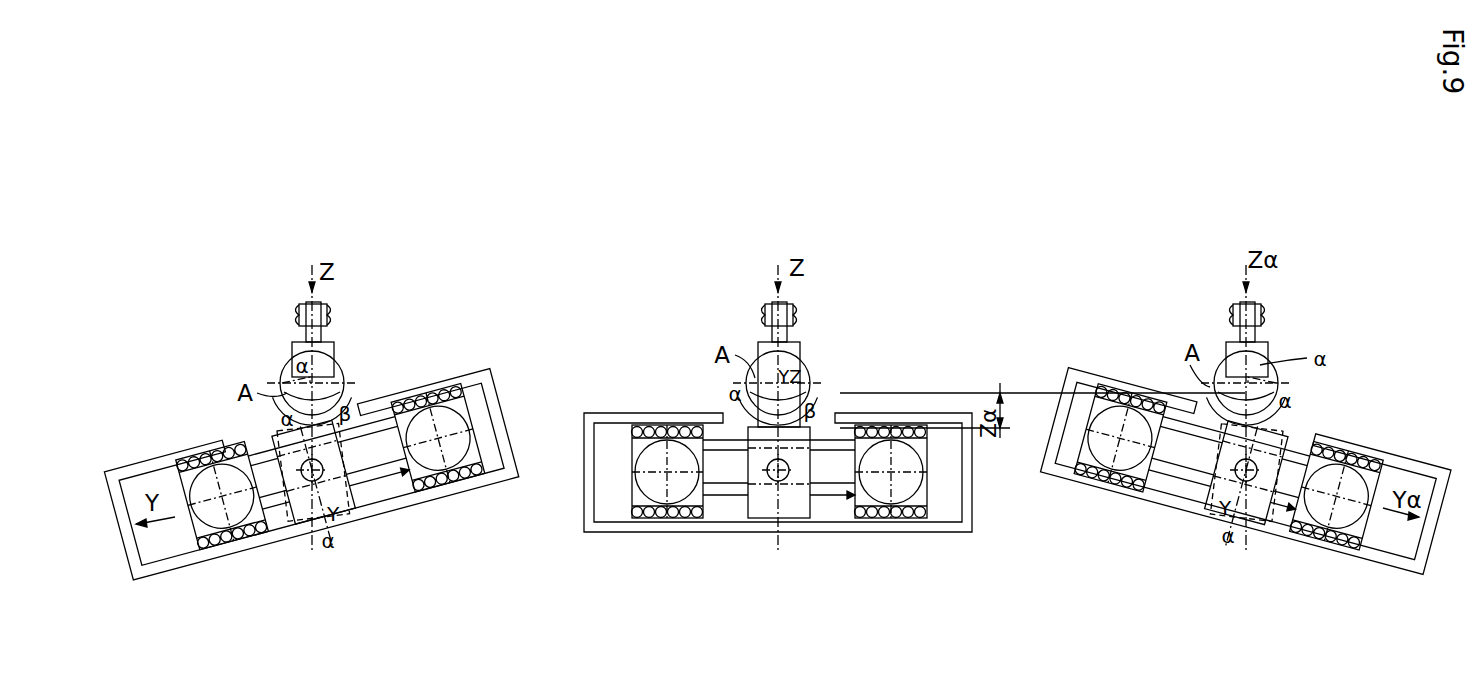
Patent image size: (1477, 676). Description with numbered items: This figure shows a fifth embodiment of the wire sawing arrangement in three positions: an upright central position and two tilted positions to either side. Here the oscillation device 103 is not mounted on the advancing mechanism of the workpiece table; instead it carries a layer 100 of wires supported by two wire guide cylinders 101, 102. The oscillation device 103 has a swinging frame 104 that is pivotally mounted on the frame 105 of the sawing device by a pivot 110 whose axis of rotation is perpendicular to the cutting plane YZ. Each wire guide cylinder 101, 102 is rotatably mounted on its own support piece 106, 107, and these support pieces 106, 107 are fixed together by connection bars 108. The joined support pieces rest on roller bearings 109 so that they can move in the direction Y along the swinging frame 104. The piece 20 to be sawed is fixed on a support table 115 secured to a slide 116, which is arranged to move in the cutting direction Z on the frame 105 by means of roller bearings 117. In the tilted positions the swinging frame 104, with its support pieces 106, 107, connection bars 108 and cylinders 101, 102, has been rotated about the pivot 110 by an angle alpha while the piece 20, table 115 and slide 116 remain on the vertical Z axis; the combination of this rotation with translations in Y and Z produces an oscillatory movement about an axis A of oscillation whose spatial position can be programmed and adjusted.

The piece to be sawed 20 is at (330, 365).
The layer of wires 100 is at (373, 423).
The wire guide cylinder 101 is at (465, 450).
The wire guide cylinder 102 is at (220, 525).
The oscillation device 103 is at (450, 376).
The swinging frame 104 is at (378, 510).
The frame of the sawing device 105 is at (803, 315).
The support piece 106 is at (927, 497).
The support piece 107 is at (190, 460).
The connection bars 108 is at (400, 482).
The roller bearings 109 is at (910, 423).
The pivot 110 is at (308, 483).
The support table 115 is at (802, 350).
The slide 116 is at (772, 335).
The roller bearings 117 is at (767, 308).